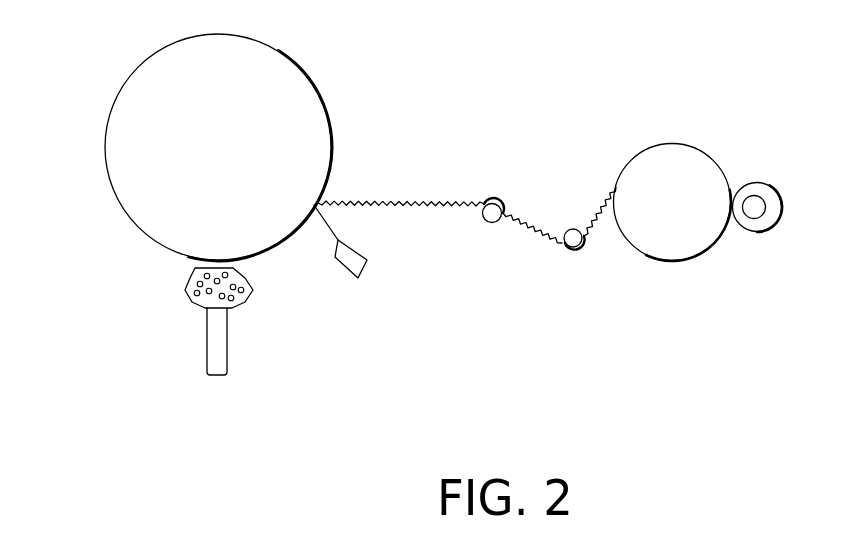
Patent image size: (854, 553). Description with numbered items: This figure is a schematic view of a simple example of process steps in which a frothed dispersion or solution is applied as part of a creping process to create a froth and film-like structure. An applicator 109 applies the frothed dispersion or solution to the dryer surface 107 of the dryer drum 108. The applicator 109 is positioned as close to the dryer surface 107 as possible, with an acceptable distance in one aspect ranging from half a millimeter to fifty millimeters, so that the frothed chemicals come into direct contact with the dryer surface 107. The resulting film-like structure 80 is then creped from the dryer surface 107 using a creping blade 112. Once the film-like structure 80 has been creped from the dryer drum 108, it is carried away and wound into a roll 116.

The film-like structure 80 is at (403, 202).
The dryer surface 107 is at (106, 173).
The dryer drum 108 is at (275, 80).
The applicator 109 is at (218, 378).
The creping blade 112 is at (343, 272).
The roll 116 is at (747, 185).